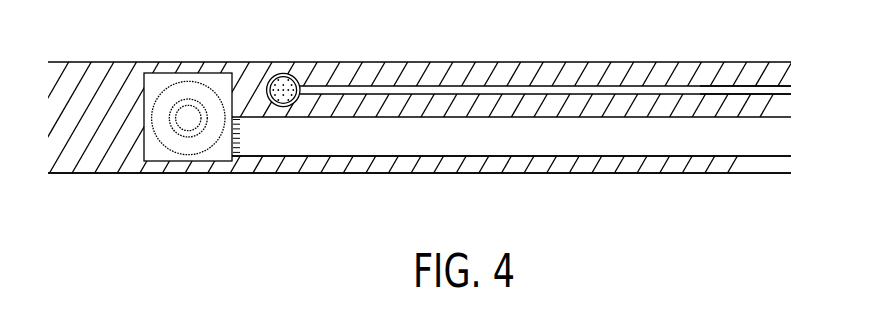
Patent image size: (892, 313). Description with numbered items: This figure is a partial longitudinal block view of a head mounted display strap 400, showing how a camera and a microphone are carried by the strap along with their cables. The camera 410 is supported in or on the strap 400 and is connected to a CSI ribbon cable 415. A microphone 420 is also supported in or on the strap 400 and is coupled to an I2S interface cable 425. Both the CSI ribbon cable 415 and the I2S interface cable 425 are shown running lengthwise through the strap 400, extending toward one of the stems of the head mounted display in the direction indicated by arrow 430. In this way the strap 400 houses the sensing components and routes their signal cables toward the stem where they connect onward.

The head mounted display strap 400 is at (540, 62).
The camera 410 is at (155, 73).
The CSI ribbon cable 415 is at (433, 157).
The microphone 420 is at (283, 73).
The I2S interface cable 425 is at (435, 86).
The arrow 430 is at (807, 92).